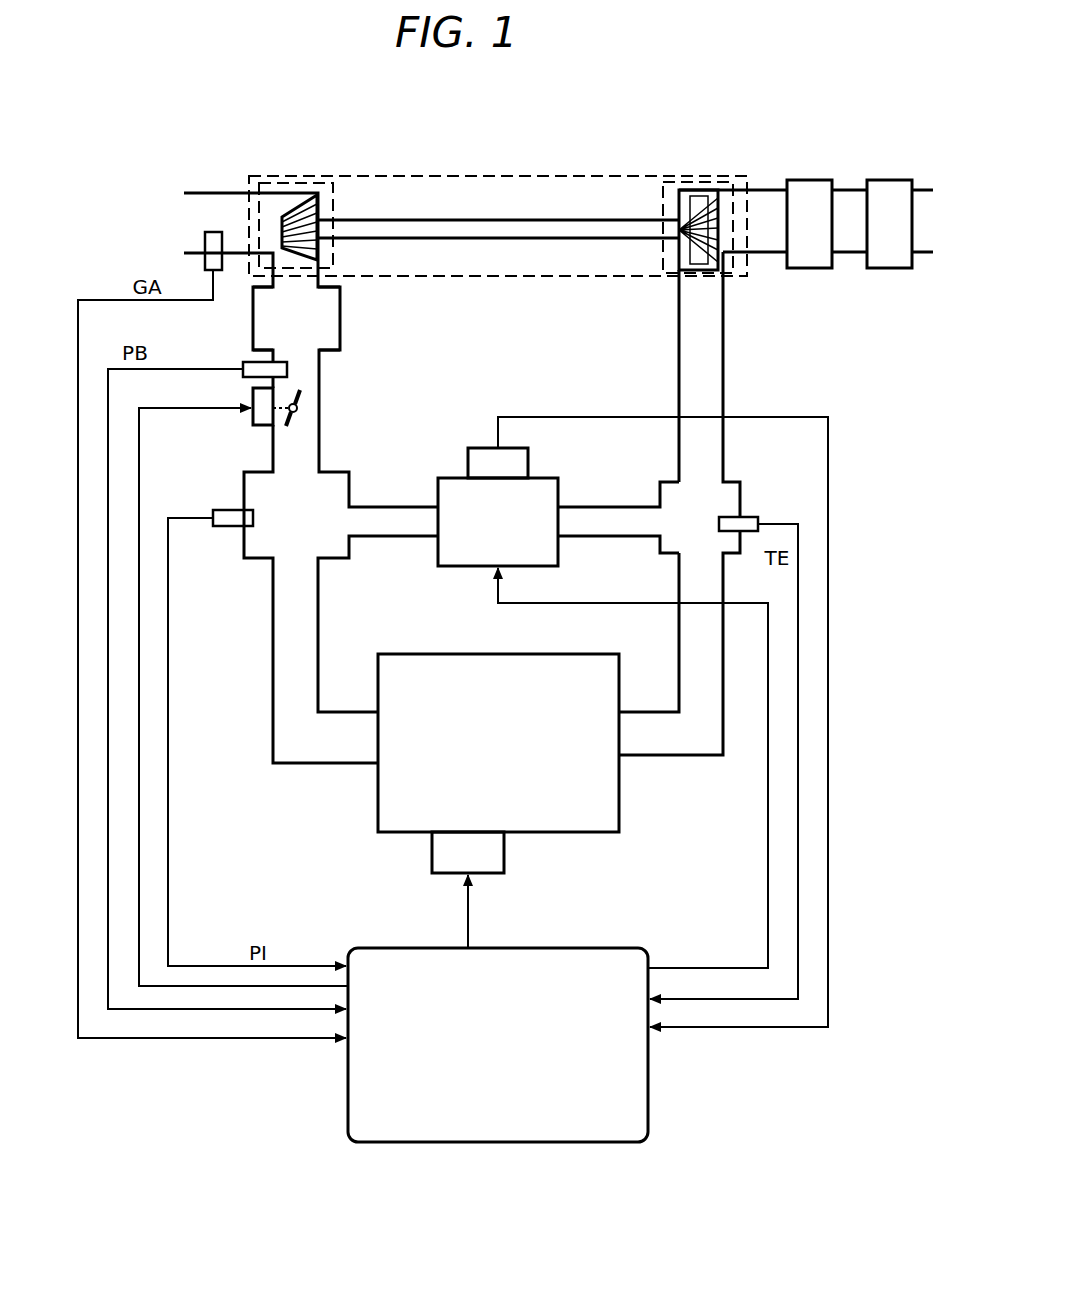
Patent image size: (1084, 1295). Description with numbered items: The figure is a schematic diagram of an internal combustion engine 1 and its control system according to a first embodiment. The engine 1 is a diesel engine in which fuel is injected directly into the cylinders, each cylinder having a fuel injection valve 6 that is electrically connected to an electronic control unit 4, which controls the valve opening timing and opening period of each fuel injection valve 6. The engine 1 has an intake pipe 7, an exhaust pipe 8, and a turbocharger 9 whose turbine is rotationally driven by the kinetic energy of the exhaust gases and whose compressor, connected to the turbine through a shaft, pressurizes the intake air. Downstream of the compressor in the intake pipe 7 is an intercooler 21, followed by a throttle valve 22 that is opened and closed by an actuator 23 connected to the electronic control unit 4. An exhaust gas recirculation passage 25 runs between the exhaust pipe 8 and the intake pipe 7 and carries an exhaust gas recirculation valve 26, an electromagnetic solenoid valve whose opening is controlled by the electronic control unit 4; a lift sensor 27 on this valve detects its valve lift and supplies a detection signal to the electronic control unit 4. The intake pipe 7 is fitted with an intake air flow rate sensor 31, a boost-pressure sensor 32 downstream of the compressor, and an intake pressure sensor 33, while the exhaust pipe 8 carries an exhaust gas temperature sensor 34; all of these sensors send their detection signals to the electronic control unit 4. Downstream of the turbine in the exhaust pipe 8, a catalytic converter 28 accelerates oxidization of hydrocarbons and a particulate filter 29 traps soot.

The internal combustion engine 1 is at (393, 653).
The electronic control unit 4 is at (563, 948).
The fuel injection valve 6 is at (504, 857).
The intake pipe 7 is at (274, 655).
The exhaust pipe 8 is at (678, 339).
The turbocharger 9 is at (388, 175).
The intercooler 21 is at (340, 310).
The throttle valve 22 is at (302, 392).
The actuator 23 is at (253, 415).
The exhaust gas recirculation passage 25 is at (578, 506).
The exhaust gas recirculation valve 26 is at (465, 477).
The lift sensor 27 is at (482, 440).
The catalytic converter 28 is at (807, 180).
The particulate filter 29 is at (885, 180).
The intake air flow rate sensor 31 is at (213, 232).
The boost-pressure sensor 32 is at (252, 360).
The intake pressure sensor 33 is at (233, 509).
The exhaust gas temperature sensor 34 is at (747, 517).